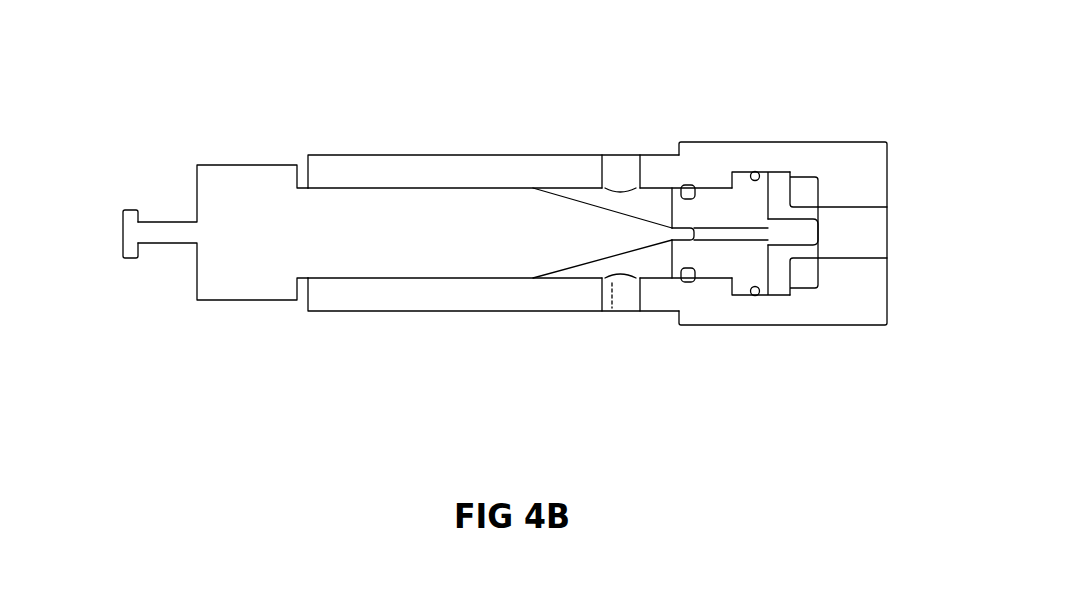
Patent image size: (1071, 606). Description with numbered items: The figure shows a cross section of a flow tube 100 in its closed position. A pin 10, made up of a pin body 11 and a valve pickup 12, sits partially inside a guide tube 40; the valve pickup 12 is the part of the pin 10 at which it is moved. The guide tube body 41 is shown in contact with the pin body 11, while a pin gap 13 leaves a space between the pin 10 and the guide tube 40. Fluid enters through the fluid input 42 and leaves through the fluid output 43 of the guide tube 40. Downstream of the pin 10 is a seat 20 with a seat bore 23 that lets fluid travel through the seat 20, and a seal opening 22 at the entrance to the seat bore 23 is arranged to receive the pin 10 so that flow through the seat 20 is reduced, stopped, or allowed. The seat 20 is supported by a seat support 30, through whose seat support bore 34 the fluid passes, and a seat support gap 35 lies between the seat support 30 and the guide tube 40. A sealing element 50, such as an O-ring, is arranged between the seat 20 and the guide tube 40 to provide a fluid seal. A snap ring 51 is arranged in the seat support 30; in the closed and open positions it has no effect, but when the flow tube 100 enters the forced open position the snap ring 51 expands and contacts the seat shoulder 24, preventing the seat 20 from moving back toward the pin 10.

The flow tube 100 is at (254, 351).
The pin 10 is at (364, 183).
The pin body 11 is at (530, 223).
The valve pickup 12 is at (141, 233).
The pin gap 13 is at (305, 172).
The seat 20 is at (713, 282).
The seal opening 22 is at (673, 230).
The seat bore 23 is at (755, 289).
The seat shoulder 24 is at (728, 280).
The seat support 30 is at (795, 170).
The seat support bore 34 is at (793, 238).
The seat support gap 35 is at (803, 193).
The guide tube 40 is at (508, 321).
The guide tube body 41 is at (423, 292).
The fluid input 42 is at (623, 295).
The fluid output 43 is at (870, 233).
The sealing element 50 is at (685, 187).
The snap ring 51 is at (750, 237).